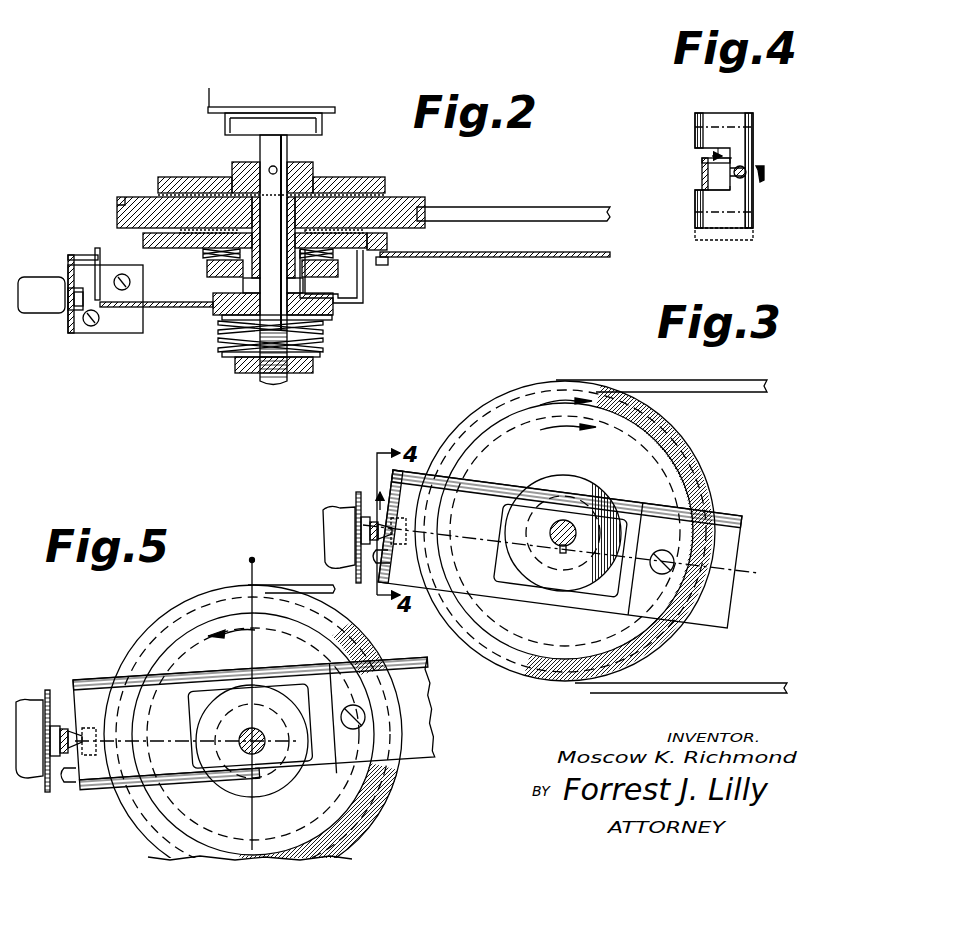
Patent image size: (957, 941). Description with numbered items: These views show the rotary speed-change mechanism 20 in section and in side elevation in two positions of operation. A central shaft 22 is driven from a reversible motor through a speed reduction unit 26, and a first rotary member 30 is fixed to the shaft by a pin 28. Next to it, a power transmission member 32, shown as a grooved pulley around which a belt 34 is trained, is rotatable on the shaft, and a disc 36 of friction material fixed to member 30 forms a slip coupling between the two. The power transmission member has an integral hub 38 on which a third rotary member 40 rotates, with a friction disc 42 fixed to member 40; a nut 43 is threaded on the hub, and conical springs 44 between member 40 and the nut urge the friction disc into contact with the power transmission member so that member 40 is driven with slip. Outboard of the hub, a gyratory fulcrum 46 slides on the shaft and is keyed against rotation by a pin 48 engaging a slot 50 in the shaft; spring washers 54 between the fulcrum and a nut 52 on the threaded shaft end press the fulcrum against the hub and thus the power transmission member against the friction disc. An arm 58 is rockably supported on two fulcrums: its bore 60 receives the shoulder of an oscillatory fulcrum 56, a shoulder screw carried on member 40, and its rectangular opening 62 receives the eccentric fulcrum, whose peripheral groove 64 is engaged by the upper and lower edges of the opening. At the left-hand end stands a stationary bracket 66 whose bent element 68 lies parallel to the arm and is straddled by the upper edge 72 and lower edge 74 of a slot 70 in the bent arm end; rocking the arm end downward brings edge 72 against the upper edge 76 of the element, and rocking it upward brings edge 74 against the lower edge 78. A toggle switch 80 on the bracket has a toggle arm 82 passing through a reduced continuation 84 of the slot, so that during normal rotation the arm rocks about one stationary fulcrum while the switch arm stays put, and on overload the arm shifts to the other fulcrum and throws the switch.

In FIG. 2, the rotary speed-change mechanism 20 is at (112, 188).
In FIG. 3, the rotary speed-change mechanism 20 is at (576, 378).
In FIG. 5, the rotary speed-change mechanism 20 is at (232, 560).
In FIG. 2, the central shaft 22 is at (300, 170).
In FIG. 3, the central shaft 22 is at (563, 533).
In FIG. 5, the central shaft 22 is at (250, 756).
In FIG. 2, the speed reduction unit 26 is at (340, 102).
In FIG. 2, the pin 28 is at (269, 168).
In FIG. 2, the first rotary member 30 is at (190, 177).
In FIG. 2, the power transmission member 32 is at (405, 198).
In FIG. 3, the power transmission member 32 is at (504, 396).
In FIG. 5, the power transmission member 32 is at (190, 603).
In FIG. 2, the belt 34 is at (535, 206).
In FIG. 3, the belt 34 is at (706, 392).
In FIG. 5, the belt 34 is at (291, 589).
In FIG. 2, the friction disc 36 is at (378, 177).
In FIG. 2, the hub 38 is at (362, 286).
In FIG. 2, the third rotary member 40 is at (186, 249).
In FIG. 3, the third rotary member 40 is at (494, 430).
In FIG. 5, the third rotary member 40 is at (175, 644).
In FIG. 2, the friction disc 42 is at (372, 228).
In FIG. 2, the nut 43 is at (340, 270).
In FIG. 2, the conical springs 44 is at (210, 278).
In FIG. 2, the gyratory fulcrum 46 is at (230, 315).
In FIG. 3, the gyratory fulcrum 46 is at (604, 510).
In FIG. 5, the gyratory fulcrum 46 is at (272, 712).
In FIG. 2, the pin 48 is at (243, 285).
In FIG. 2, the slot 50 is at (310, 246).
In FIG. 2, the nut 52 is at (316, 369).
In FIG. 2, the spring washers 54 is at (328, 342).
In FIG. 2, the oscillatory fulcrum 56 is at (388, 262).
In FIG. 3, the oscillatory fulcrum 56 is at (672, 560).
In FIG. 5, the oscillatory fulcrum 56 is at (362, 714).
In FIG. 2, the arm 58 is at (505, 261).
In FIG. 4, the arm 58 is at (705, 117).
In FIG. 3, the arm 58 is at (728, 515).
In FIG. 5, the arm 58 is at (418, 772).
In FIG. 2, the bore 60 is at (389, 242).
In FIG. 2, the opening 62 is at (333, 318).
In FIG. 5, the opening 62 is at (192, 705).
In FIG. 2, the peripheral groove 64 is at (213, 310).
In FIG. 2, the bracket 66 is at (72, 322).
In FIG. 2, the bracket element 68 is at (72, 255).
In FIG. 4, the bracket element 68 is at (702, 182).
In FIG. 4, the slot 70 is at (728, 150).
In FIG. 4, the upper edge 72 is at (698, 158).
In FIG. 4, the lower edge 74 is at (724, 192).
In FIG. 4, the upper edge 76 is at (704, 162).
In FIG. 3, the upper edge 76 is at (360, 508).
In FIG. 5, the upper edge 76 is at (64, 694).
In FIG. 4, the lower edge 78 is at (712, 196).
In FIG. 3, the lower edge 78 is at (385, 560).
In FIG. 5, the lower edge 78 is at (66, 784).
In FIG. 2, the toggle switch 80 is at (50, 260).
In FIG. 3, the toggle switch 80 is at (326, 514).
In FIG. 5, the toggle switch 80 is at (36, 690).
In FIG. 2, the toggle arm 82 is at (97, 302).
In FIG. 4, the toggle arm 82 is at (747, 168).
In FIG. 3, the toggle arm 82 is at (365, 530).
In FIG. 5, the toggle arm 82 is at (82, 726).
In FIG. 4, the reduced continuation 84 is at (777, 174).